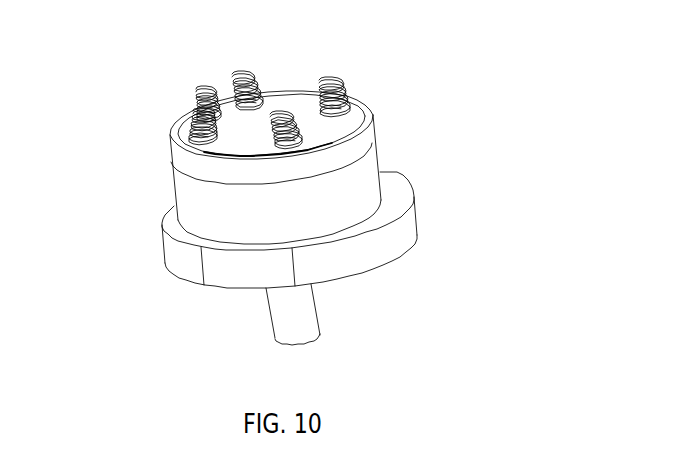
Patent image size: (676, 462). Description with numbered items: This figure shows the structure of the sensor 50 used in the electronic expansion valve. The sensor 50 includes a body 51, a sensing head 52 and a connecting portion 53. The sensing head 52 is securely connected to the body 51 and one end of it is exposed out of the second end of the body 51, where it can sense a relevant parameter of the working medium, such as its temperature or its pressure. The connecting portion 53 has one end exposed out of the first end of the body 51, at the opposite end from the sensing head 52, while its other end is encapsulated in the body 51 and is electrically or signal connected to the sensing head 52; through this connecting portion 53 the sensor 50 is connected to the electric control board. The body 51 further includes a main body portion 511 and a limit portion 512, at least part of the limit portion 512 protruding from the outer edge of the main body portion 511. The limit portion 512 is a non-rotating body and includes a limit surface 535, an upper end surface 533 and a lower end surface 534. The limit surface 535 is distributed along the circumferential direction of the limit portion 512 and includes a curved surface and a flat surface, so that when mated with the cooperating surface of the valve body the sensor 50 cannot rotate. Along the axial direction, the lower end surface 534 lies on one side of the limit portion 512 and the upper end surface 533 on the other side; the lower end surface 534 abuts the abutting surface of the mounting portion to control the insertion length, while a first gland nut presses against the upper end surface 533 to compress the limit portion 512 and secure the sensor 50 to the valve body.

The sensor 50 is at (152, 83).
The body 51 is at (220, 208).
The main body portion 511 is at (320, 193).
The limit portion 512 is at (225, 260).
The sensing head 52 is at (290, 320).
The connecting portion 53 is at (350, 85).
The upper end surface of the limit portion 533 is at (395, 202).
The lower end surface of the limit portion 534 is at (410, 247).
The limit surface 535 is at (370, 247).